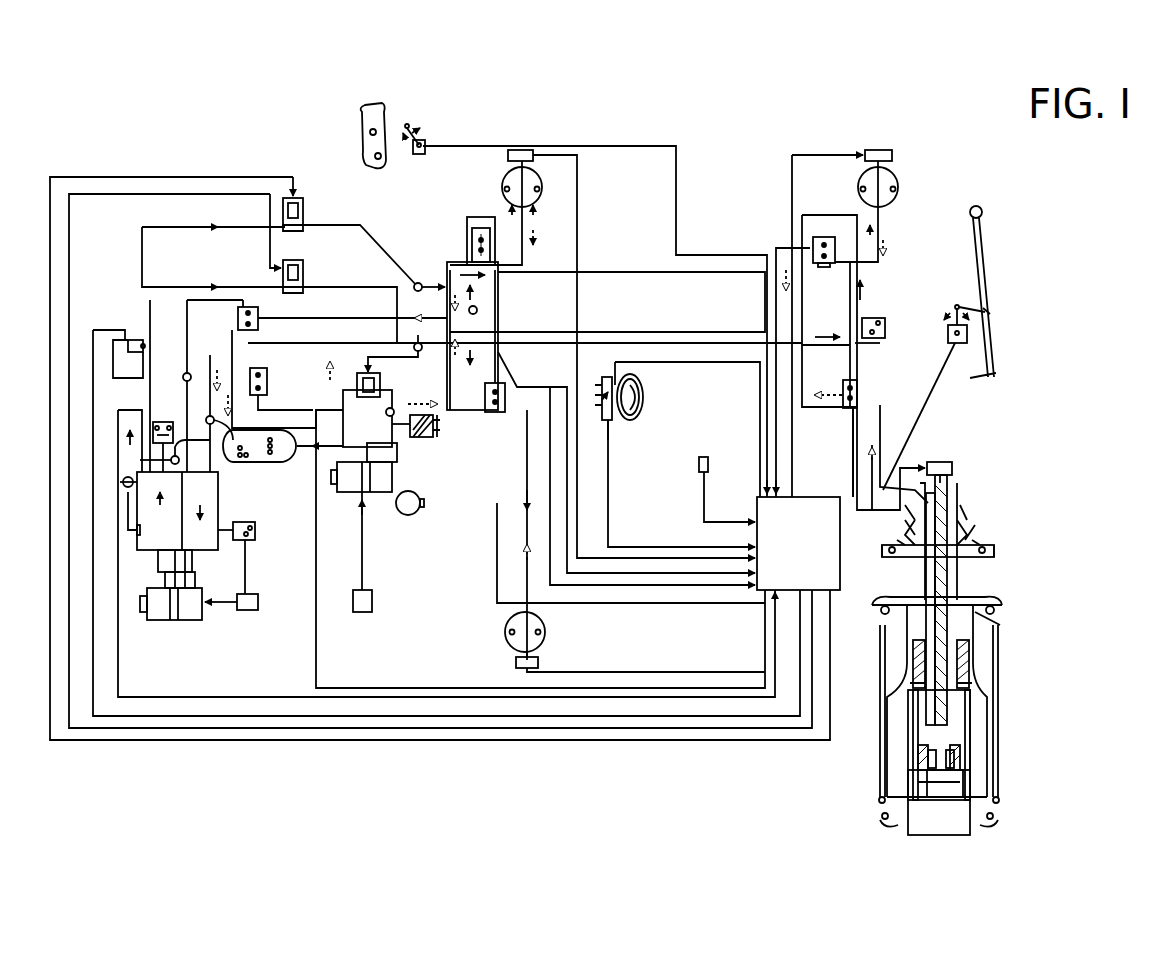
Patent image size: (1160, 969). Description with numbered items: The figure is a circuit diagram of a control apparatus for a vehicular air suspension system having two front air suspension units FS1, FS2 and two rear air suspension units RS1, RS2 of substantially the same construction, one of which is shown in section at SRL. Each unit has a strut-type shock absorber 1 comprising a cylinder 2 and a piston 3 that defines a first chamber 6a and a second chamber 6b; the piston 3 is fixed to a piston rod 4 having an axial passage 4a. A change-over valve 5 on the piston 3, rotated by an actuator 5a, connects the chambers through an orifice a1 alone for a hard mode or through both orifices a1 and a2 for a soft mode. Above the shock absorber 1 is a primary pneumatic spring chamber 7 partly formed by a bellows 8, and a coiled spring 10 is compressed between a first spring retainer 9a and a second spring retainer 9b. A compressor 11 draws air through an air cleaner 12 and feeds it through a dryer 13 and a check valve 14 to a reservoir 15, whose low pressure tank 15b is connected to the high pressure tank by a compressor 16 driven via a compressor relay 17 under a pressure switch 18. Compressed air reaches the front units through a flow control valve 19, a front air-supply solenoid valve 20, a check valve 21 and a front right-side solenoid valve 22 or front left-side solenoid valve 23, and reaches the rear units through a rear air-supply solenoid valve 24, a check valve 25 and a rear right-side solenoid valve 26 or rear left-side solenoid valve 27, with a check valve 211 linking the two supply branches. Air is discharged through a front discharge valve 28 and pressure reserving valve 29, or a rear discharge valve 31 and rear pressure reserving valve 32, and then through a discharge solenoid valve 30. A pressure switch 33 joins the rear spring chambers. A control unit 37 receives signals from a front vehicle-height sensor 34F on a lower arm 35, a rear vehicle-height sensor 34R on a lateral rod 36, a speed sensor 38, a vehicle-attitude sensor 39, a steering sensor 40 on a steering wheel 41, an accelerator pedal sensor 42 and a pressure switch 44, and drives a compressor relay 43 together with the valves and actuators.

The strut-type shock absorber 1 is at (920, 830).
The cylinder 2 is at (987, 730).
The piston 3 is at (960, 782).
The piston rod 4 is at (969, 660).
The axial passage 4a is at (950, 573).
The change-over valve 5 is at (945, 797).
The actuator 5a is at (520, 150).
The first chamber 6a is at (918, 720).
The second chamber 6b is at (915, 792).
The primary pneumatic spring chamber 7 is at (965, 680).
The bellows 8 is at (998, 705).
The first spring retainer 9a is at (1002, 603).
The second spring retainer 9b is at (995, 825).
The coiled spring 10 is at (1000, 625).
The compressor 11 is at (382, 492).
The air cleaner 12 is at (421, 437).
The dryer 13 is at (262, 462).
The check valve 14 is at (172, 460).
The reservoir 15 is at (137, 572).
The low pressure tank 15b is at (220, 500).
The compressor 16 is at (180, 620).
The compressor relay 17 is at (248, 610).
The pressure switch 18 is at (255, 530).
The flow control valve 19 is at (145, 345).
The front air-supply solenoid valve 20 is at (303, 205).
The check valve 21 is at (418, 283).
The check valve 211 is at (477, 310).
The front right-side solenoid valve 22 is at (467, 235).
The front left-side solenoid valve 23 is at (495, 412).
The rear air-supply solenoid valve 24 is at (303, 265).
The check valve 25 is at (418, 352).
The rear right-side solenoid valve 26 is at (813, 245).
The rear left-side solenoid valve 27 is at (857, 385).
The front discharge valve 28 is at (258, 315).
The pressure reserving valve 29 is at (190, 375).
The discharge solenoid valve 30 is at (367, 397).
The rear discharge valve 31 is at (267, 385).
The rear pressure reserving valve 32 is at (180, 465).
The pressure switch 33 is at (878, 318).
The front vehicle-height sensor 34F is at (418, 154).
The rear vehicle-height sensor 34R is at (948, 335).
The lower arm 35 is at (392, 120).
The lateral rod 36 is at (992, 330).
The control unit 37 is at (822, 497).
The speed sensor 38 is at (612, 450).
The vehicle-attitude sensor 39 is at (704, 455).
The steering sensor 40 is at (620, 415).
The steering wheel 41 is at (643, 390).
The accelerator pedal sensor 42 is at (412, 515).
The compressor relay 43 is at (362, 612).
The pressure switch 44 is at (168, 422).
The front air suspension unit FS1 is at (545, 632).
The front air suspension unit FS2 is at (502, 180).
The rear air suspension unit RS1 is at (970, 458).
The rear air suspension unit RS2 is at (898, 180).
The suspension unit in section SRL is at (965, 675).
The orifice a1 is at (920, 755).
The orifice a2 is at (930, 775).